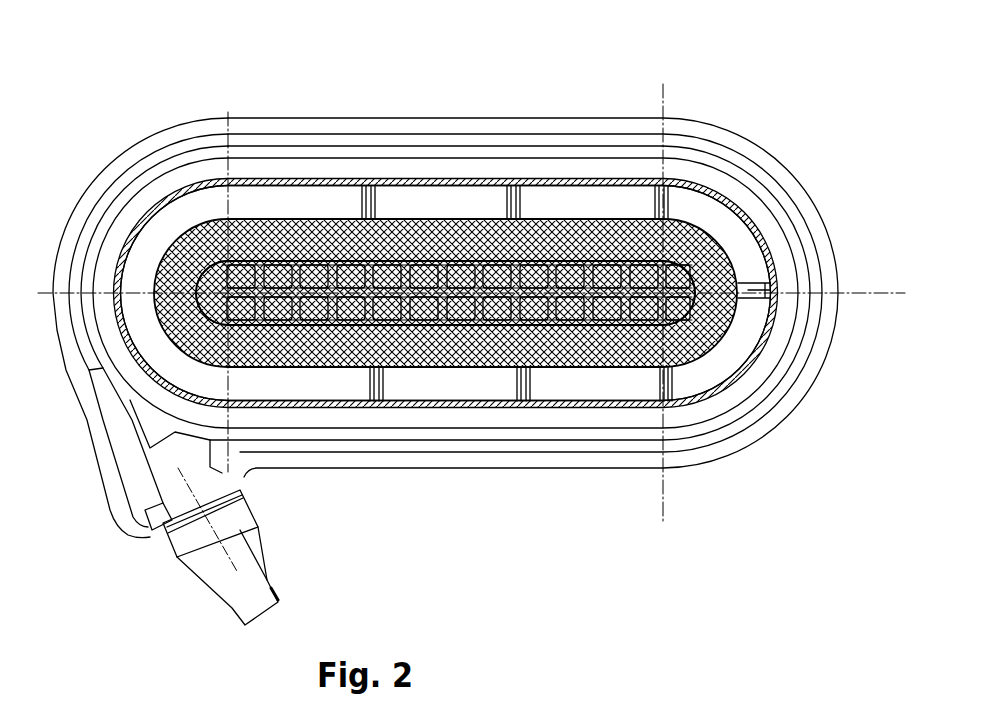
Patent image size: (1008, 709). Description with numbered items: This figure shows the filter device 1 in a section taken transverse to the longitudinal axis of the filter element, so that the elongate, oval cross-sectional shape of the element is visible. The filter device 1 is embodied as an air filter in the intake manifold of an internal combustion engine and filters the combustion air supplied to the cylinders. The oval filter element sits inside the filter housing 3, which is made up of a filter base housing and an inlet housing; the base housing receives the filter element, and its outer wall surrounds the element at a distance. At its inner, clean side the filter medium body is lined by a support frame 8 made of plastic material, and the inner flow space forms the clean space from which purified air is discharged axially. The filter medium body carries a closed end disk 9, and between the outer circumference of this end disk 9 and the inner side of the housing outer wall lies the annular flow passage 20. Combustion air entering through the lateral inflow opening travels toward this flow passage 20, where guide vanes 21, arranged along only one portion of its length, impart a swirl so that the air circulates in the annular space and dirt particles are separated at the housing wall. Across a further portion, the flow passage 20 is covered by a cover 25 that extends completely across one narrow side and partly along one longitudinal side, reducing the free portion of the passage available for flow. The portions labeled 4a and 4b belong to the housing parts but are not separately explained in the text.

The filter device 1 is at (537, 71).
The filter housing 3 is at (352, 112).
The handle tube 4a is at (95, 447).
The housing wall 4b is at (403, 183).
The support frame 8 is at (470, 318).
The closed end disk 9 is at (298, 355).
The flow passage 20 is at (428, 393).
The guide vanes 21 is at (657, 383).
The cover 25 is at (152, 237).